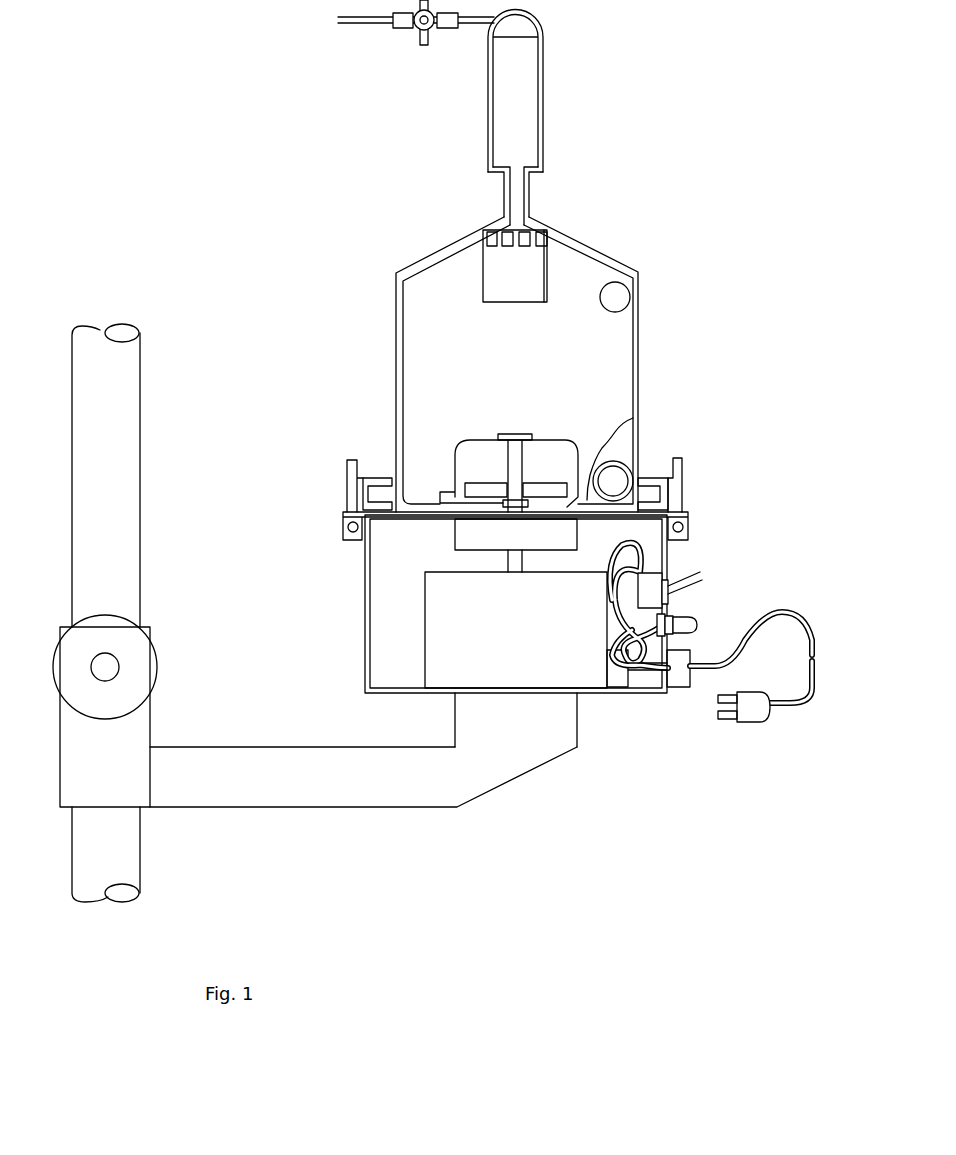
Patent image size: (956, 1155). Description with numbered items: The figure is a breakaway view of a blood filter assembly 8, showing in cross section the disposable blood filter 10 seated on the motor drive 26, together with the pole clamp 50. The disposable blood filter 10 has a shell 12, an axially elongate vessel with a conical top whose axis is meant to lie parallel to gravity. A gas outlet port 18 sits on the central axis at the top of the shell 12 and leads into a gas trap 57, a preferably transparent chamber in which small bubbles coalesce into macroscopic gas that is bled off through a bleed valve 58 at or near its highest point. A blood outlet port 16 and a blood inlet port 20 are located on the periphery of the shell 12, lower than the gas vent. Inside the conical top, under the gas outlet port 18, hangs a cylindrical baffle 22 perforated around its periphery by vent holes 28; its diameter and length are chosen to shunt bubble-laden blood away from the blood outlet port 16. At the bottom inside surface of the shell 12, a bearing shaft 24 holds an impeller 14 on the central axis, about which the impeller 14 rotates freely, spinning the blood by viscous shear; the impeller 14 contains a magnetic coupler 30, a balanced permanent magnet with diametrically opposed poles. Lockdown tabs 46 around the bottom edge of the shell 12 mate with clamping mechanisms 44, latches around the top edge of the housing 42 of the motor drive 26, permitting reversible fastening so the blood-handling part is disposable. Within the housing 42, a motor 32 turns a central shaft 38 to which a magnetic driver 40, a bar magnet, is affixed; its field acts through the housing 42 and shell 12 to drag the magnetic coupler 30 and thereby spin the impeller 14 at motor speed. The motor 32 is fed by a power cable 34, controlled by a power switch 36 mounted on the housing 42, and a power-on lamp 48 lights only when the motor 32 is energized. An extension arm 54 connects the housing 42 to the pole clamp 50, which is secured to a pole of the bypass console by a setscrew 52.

The blood filter assembly 8 is at (530, 342).
The disposable blood filter 10 is at (396, 328).
The shell 12 is at (640, 330).
The impeller 14 is at (582, 457).
The blood outlet port 16 is at (620, 290).
The gas outlet port 18 is at (529, 200).
The blood inlet port 20 is at (630, 462).
The baffle 22 is at (550, 262).
The bearing shaft 24 is at (510, 432).
The motor drive 26 is at (370, 691).
The vent holes 28 is at (500, 238).
The magnetic coupler 30 is at (465, 497).
The motor 32 is at (425, 620).
The power cable 34 is at (802, 612).
The power switch 36 is at (703, 572).
The central shaft 38 is at (508, 562).
The magnetic driver 40 is at (516, 534).
The housing 42 is at (364, 662).
The clamping mechanisms 44 is at (345, 476).
The lockdown tabs 46 is at (390, 500).
The power-on lamp 48 is at (697, 624).
The pole clamp 50 is at (153, 728).
The setscrew 52 is at (130, 655).
The extension arm 54 is at (300, 808).
The gas trap 57 is at (545, 70).
The bleed valve 58 is at (417, 27).